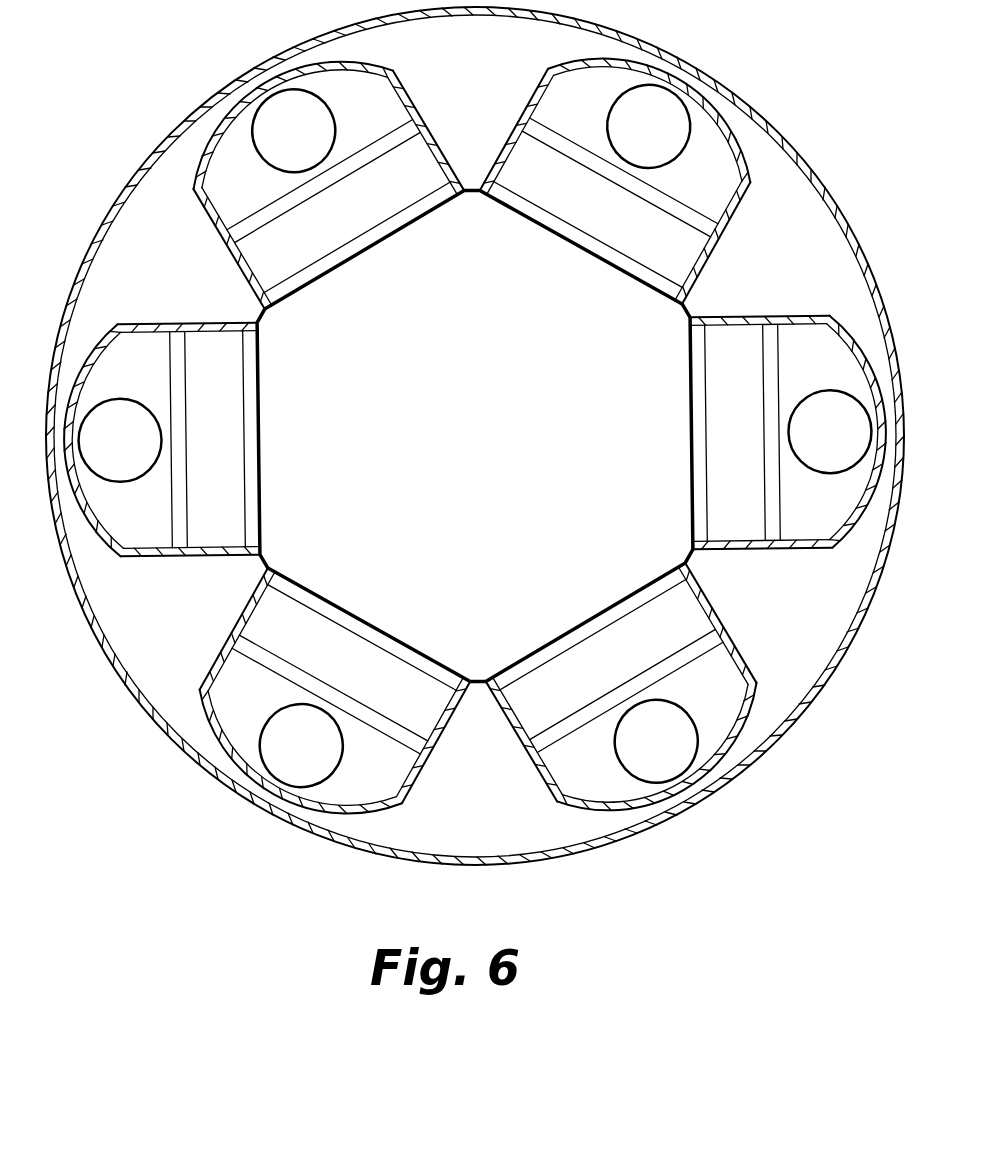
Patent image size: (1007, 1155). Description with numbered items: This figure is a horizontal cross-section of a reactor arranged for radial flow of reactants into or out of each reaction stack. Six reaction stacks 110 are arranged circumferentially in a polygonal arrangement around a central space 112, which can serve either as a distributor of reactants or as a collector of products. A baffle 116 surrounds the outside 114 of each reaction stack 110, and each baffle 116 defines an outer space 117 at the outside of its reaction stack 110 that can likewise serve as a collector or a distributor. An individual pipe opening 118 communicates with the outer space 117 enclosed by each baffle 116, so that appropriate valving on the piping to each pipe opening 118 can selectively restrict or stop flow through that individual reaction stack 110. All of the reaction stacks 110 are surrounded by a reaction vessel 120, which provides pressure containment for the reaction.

The reaction stack 110 is at (475, 436).
The central space 112 is at (470, 417).
The outside of reaction stack 114 is at (548, 122).
The baffle 116 is at (740, 130).
The outer space 117 is at (707, 182).
The pipe opening 118 is at (323, 752).
The reaction vessel 120 is at (798, 728).